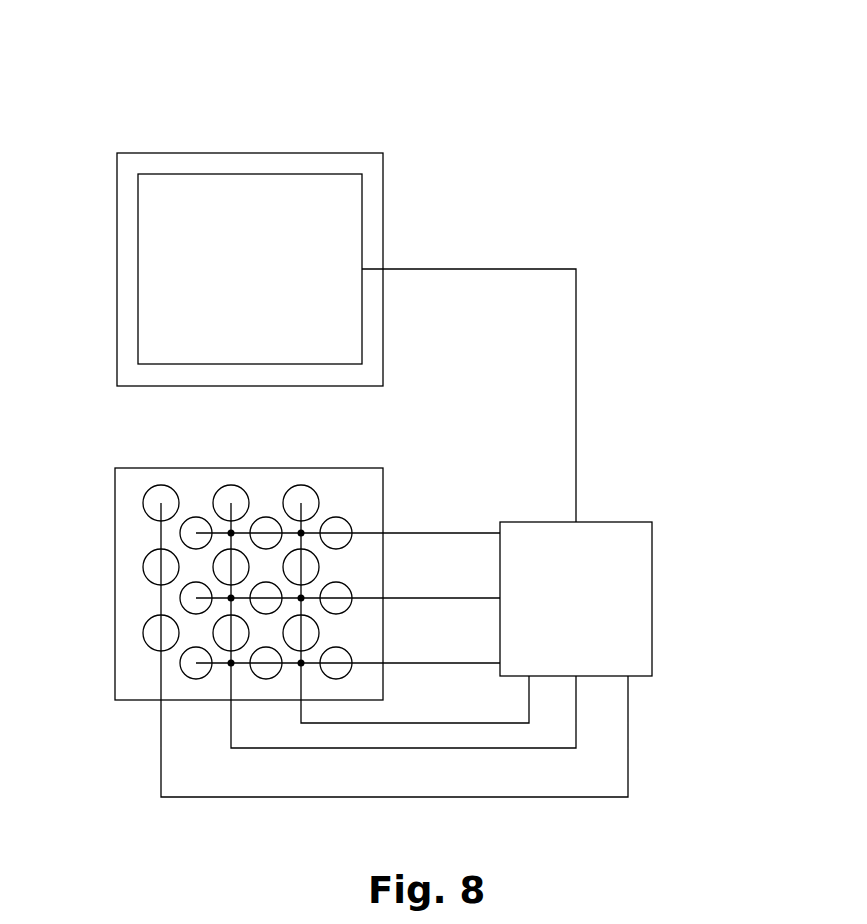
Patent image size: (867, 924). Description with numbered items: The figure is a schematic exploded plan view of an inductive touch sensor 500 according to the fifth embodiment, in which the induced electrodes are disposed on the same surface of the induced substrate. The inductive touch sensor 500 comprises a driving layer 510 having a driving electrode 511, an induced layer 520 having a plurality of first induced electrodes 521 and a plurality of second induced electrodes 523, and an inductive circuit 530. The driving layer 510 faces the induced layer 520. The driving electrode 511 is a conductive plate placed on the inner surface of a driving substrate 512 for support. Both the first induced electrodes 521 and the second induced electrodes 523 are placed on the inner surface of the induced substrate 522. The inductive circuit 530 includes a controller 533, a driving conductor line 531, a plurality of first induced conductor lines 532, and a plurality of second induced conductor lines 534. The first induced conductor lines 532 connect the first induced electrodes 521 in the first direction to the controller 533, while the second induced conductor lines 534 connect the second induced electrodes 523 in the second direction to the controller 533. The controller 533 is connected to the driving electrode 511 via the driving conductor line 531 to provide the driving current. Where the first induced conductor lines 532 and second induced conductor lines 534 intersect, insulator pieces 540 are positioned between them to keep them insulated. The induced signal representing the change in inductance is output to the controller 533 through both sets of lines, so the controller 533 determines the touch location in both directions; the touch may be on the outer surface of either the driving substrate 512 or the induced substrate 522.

The inductive touch sensor 500 is at (415, 407).
The driving layer 510 is at (244, 242).
The driving electrode 511 is at (193, 197).
The driving substrate 512 is at (370, 165).
The induced layer 520 is at (248, 568).
The first induced electrodes 521 is at (193, 522).
The induced substrate 522 is at (362, 670).
The second induced electrodes 523 is at (163, 492).
The insulator pieces 540 is at (303, 530).
The inductive circuit 530 is at (479, 542).
The driving conductor line 531 is at (576, 396).
The first induced conductor lines 532 is at (448, 533).
The controller 533 is at (607, 608).
The second induced conductor lines 534 is at (432, 745).